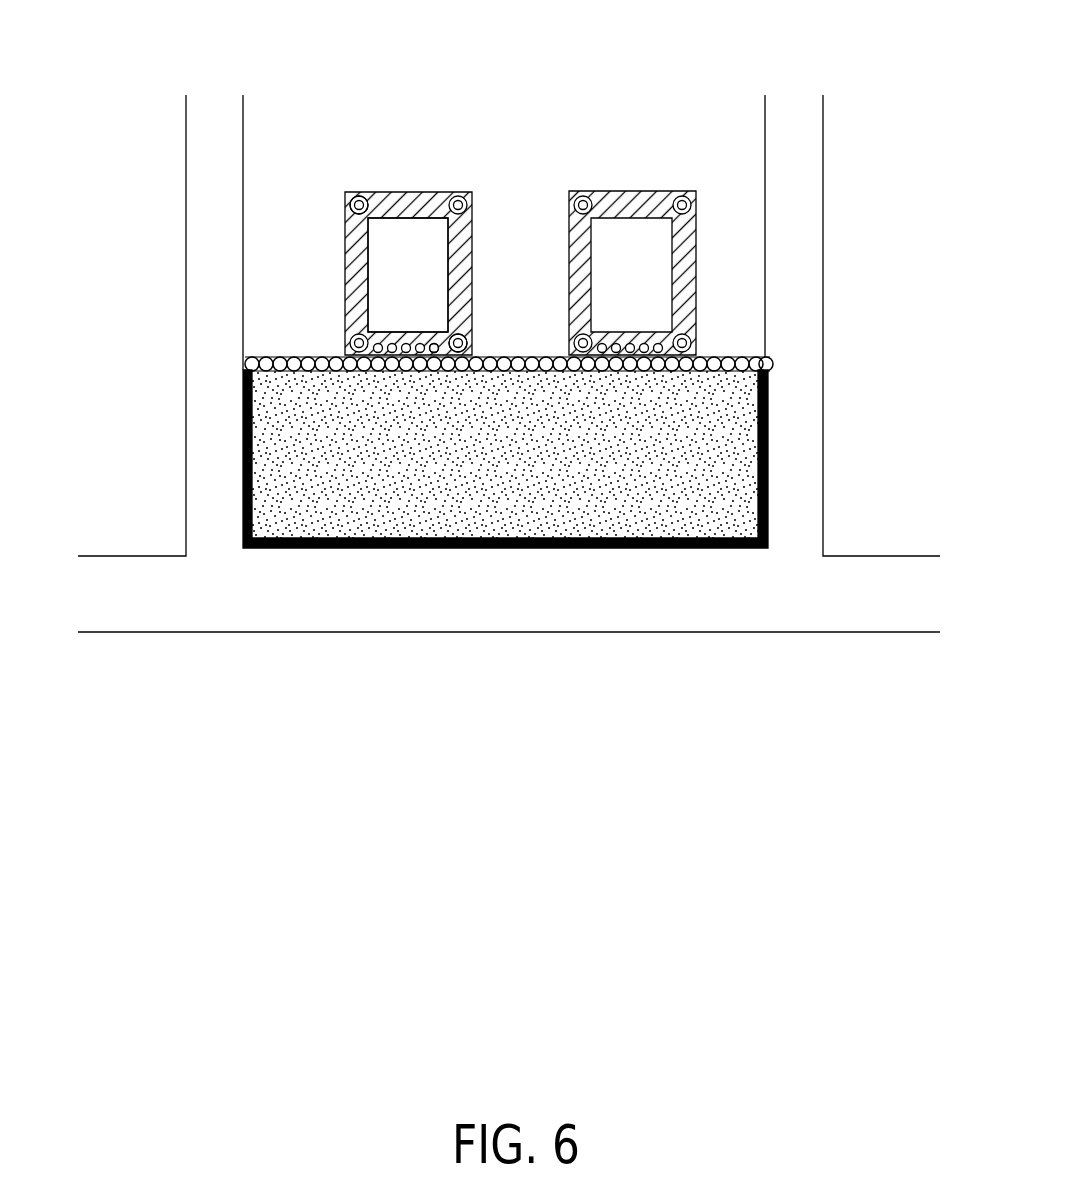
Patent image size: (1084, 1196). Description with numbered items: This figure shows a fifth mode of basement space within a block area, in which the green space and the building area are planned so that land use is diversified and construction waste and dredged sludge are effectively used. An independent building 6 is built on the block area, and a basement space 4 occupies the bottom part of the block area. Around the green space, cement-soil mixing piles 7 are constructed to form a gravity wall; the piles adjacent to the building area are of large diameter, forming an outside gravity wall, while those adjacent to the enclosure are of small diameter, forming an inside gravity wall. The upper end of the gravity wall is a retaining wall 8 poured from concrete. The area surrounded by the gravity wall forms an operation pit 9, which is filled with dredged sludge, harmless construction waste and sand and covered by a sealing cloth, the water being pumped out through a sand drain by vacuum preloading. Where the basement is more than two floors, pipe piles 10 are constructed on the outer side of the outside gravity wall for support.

The basement space 4 is at (335, 262).
The independent building 6 is at (391, 238).
The cement-soil mixing pile 7 is at (242, 376).
The retaining wall 8 is at (303, 355).
The operation pit 9 is at (597, 500).
The pipe pile 10 is at (343, 197).